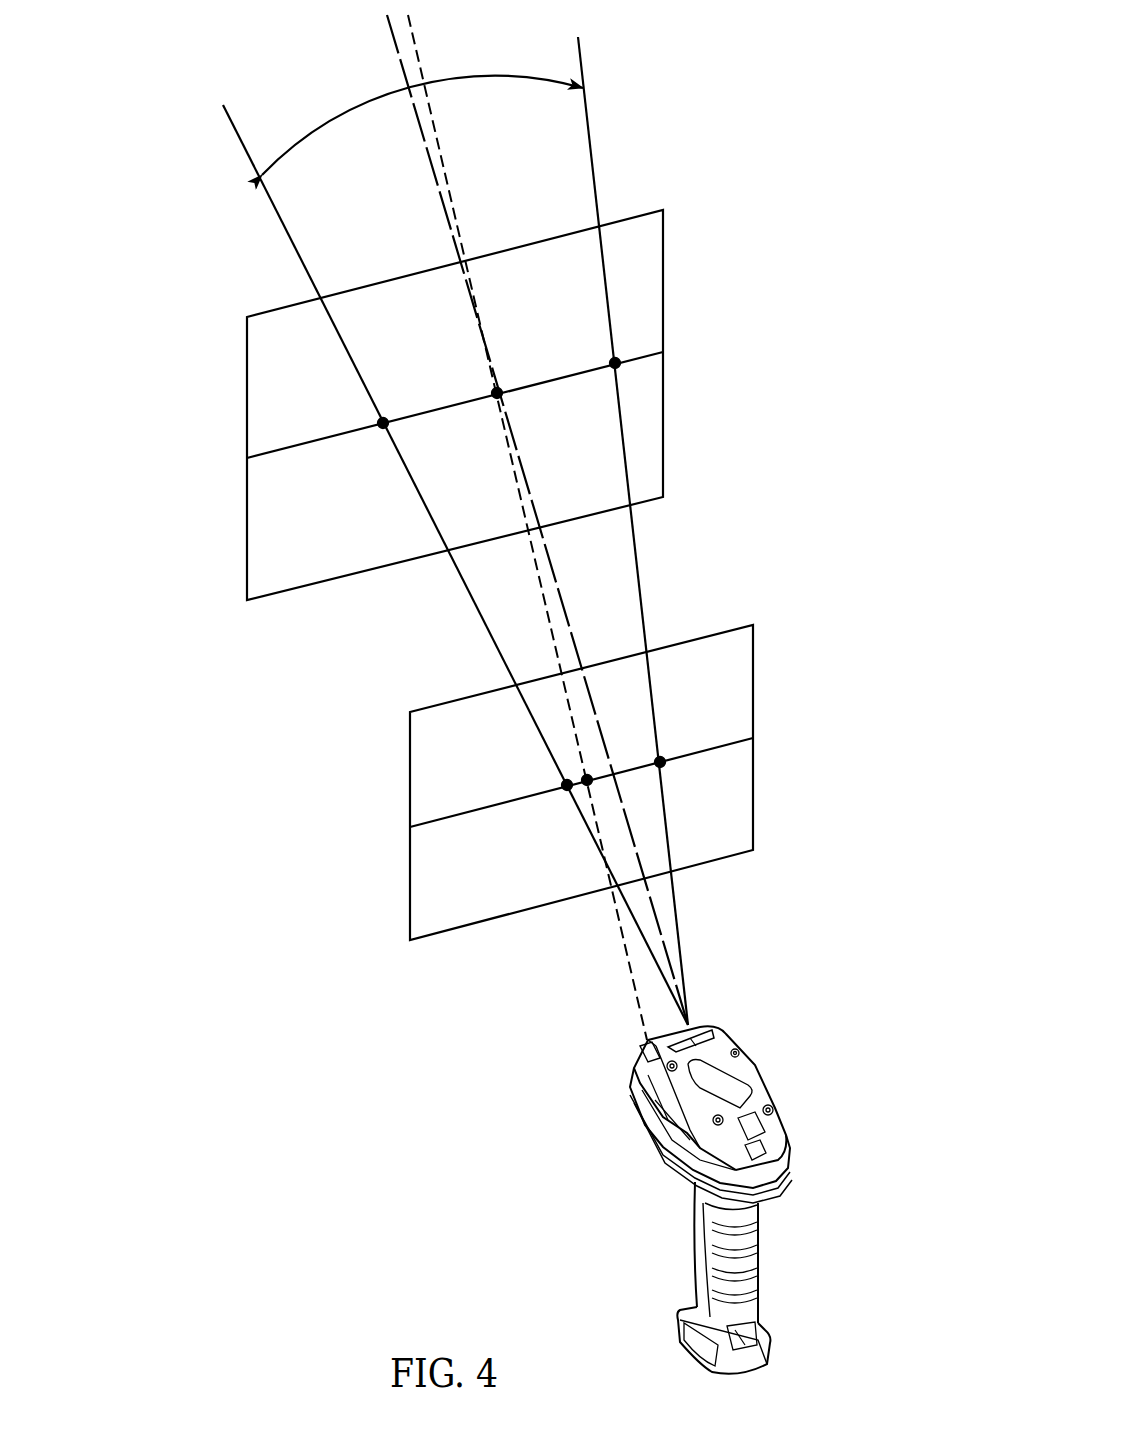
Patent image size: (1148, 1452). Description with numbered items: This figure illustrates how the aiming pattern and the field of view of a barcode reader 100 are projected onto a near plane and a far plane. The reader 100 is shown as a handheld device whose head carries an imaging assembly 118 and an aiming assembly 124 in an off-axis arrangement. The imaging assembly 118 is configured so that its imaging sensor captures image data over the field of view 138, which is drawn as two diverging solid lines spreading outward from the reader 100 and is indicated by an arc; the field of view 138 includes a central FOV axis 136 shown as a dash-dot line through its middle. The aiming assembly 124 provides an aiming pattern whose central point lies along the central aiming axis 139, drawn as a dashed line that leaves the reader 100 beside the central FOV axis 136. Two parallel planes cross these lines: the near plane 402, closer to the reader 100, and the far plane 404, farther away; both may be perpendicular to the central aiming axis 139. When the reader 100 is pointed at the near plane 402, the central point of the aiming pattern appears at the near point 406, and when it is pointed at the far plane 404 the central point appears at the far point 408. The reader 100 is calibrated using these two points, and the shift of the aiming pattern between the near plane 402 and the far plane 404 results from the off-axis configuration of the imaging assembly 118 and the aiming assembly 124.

The barcode reader 100 is at (822, 1001).
The imaging assembly 118 is at (698, 1024).
The aiming assembly 124 is at (645, 1039).
The central FOV axis 136 is at (427, 157).
The field of view 138 is at (540, 76).
The central aiming axis 139 is at (437, 137).
The near plane 402 is at (351, 752).
The far plane 404 is at (188, 453).
The near point 406 is at (582, 777).
The far point 408 is at (492, 388).